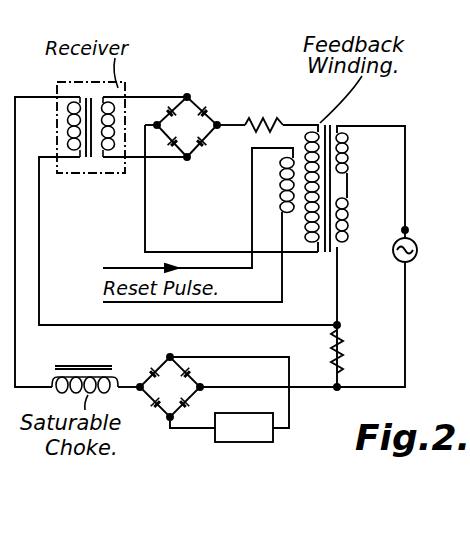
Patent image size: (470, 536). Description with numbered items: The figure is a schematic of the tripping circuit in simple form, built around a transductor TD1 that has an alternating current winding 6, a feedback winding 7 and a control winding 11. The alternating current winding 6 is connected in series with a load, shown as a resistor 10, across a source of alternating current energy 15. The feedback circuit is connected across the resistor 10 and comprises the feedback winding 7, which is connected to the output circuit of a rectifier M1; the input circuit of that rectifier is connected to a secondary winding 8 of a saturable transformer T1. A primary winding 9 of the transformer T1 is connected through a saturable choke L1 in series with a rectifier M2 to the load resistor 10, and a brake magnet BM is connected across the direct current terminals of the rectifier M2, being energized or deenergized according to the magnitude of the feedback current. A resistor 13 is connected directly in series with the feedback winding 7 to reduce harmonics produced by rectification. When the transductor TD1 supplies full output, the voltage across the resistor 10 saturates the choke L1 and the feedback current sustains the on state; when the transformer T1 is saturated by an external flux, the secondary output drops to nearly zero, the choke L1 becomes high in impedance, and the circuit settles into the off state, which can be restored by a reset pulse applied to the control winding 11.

The alternating current winding 6 is at (350, 138).
The feedback winding 7 is at (305, 127).
The secondary winding 8 is at (110, 150).
The primary winding 9 is at (68, 126).
The resistor 10 is at (343, 350).
The control winding 11 is at (284, 194).
The resistor 13 is at (262, 119).
The source of alternating current energy 15 is at (418, 246).
The saturable transformer T1 is at (126, 88).
The rectifier M1 is at (191, 105).
The rectifier M2 is at (156, 368).
The saturable choke L1 is at (93, 348).
The transductor TD1 is at (327, 185).
The brake magnet BM is at (244, 427).